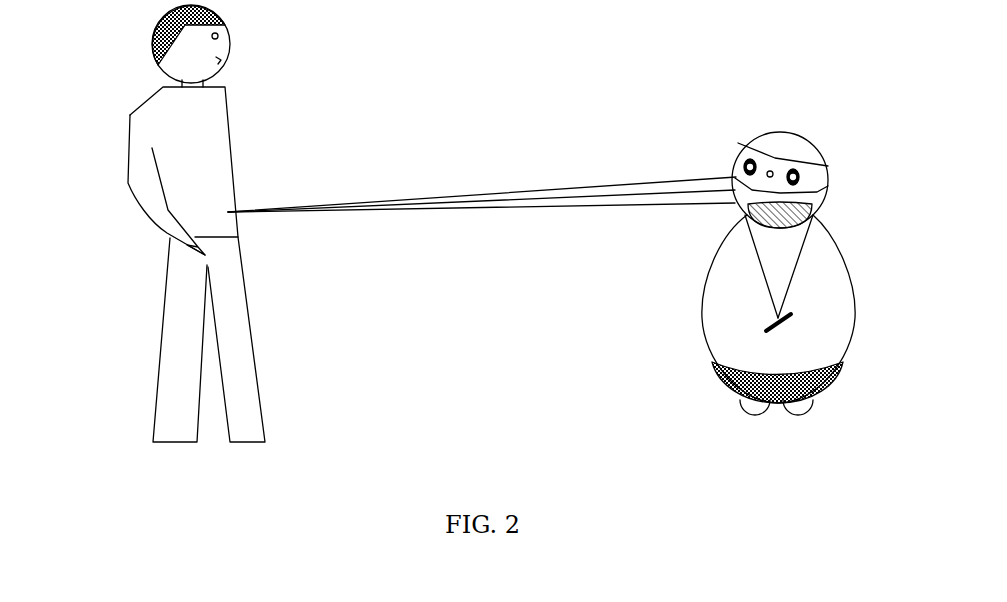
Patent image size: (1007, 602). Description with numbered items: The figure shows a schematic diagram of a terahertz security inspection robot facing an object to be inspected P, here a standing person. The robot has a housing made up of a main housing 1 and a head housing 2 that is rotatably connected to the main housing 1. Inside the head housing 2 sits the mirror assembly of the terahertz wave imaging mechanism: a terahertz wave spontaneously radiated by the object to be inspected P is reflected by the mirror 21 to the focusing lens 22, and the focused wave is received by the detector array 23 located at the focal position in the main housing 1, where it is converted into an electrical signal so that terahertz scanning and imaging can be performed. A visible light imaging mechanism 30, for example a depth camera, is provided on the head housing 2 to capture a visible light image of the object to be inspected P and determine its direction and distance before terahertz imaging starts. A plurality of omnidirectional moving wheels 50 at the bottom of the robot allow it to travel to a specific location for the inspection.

The object to be inspected P is at (200, 145).
The main housing 1 is at (855, 300).
The head housing 2 is at (775, 145).
The mirror 21 is at (817, 192).
The focusing lens 22 is at (798, 215).
The detector array 23 is at (790, 315).
The visible light imaging mechanism 30 is at (786, 166).
The omnidirectional moving wheels 50 is at (813, 408).